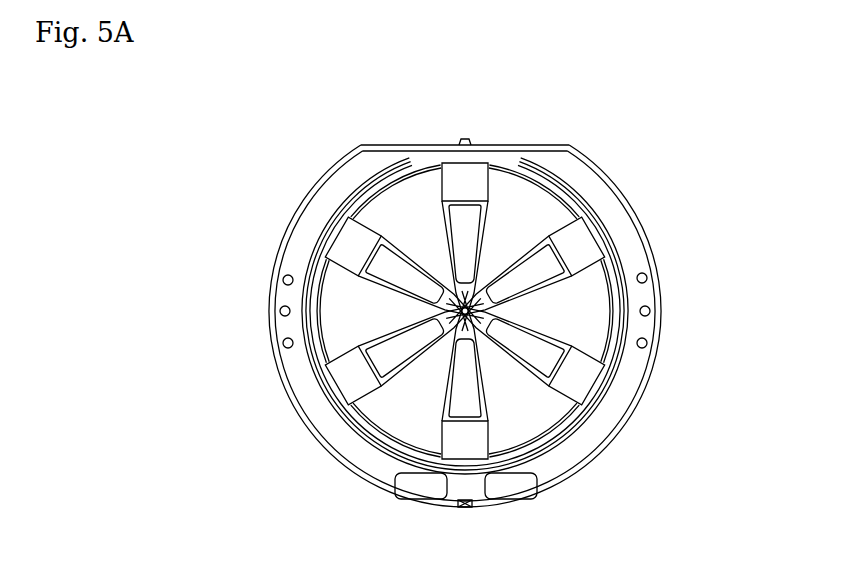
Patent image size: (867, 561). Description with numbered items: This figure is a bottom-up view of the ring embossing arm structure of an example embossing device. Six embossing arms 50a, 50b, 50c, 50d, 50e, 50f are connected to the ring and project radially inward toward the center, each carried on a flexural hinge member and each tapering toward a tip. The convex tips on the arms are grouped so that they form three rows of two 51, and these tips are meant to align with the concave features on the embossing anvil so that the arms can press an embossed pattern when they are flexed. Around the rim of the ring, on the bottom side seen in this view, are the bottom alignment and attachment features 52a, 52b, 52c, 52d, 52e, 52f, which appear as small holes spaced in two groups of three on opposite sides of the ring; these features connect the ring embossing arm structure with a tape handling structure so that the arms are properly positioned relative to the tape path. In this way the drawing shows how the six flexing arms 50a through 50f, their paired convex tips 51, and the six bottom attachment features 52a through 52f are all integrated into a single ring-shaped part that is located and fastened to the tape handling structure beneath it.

The three rows of two convex tips 51 is at (622, 390).
The embossing arm 50a is at (398, 182).
The embossing arm 50b is at (345, 232).
The embossing arm 50c is at (435, 315).
The embossing arm 50d is at (242, 185).
The embossing arm 50e is at (525, 350).
The embossing arm 50f is at (685, 410).
The bottom alignment and attachment feature 52a is at (283, 280).
The bottom alignment and attachment feature 52b is at (280, 311).
The bottom alignment and attachment feature 52c is at (283, 343).
The bottom alignment and attachment feature 52d is at (647, 278).
The bottom alignment and attachment feature 52e is at (650, 311).
The bottom alignment and attachment feature 52f is at (647, 343).